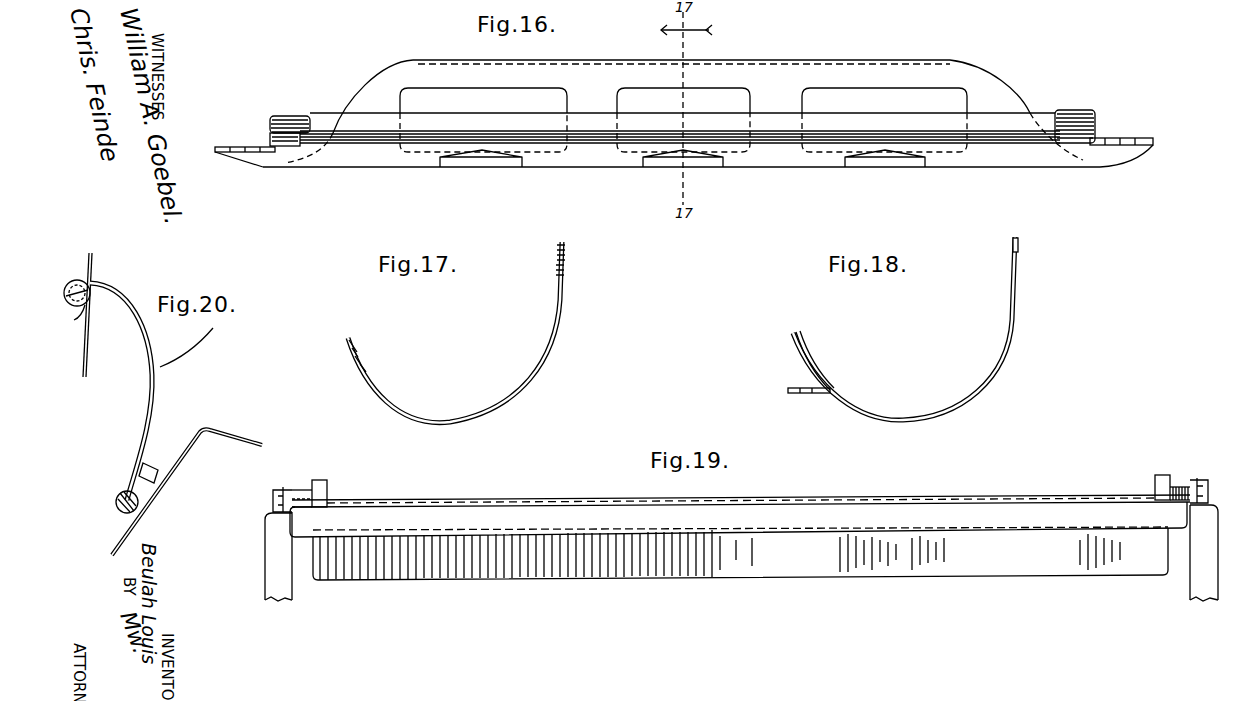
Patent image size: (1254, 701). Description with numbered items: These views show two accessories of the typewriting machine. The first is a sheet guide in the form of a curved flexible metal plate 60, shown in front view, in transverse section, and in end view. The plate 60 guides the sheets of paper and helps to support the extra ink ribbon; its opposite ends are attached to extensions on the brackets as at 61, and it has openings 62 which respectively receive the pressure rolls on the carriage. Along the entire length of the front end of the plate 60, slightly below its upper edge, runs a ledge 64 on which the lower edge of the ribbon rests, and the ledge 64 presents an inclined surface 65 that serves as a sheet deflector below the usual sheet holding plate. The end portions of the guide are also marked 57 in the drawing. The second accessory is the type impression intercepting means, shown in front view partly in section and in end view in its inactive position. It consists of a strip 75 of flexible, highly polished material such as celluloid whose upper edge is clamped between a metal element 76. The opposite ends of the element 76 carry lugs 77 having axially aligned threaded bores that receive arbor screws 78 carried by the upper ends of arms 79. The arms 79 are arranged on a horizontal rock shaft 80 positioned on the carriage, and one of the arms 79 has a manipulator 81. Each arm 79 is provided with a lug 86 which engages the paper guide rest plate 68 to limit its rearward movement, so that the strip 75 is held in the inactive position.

In FIG. 16, the clamp block 57 is at (285, 122).
In FIG. 18, the clamp block 57 is at (795, 350).
In FIG. 16, the curved flexible metal plate 60 is at (800, 70).
In FIG. 17, the curved flexible metal plate 60 is at (562, 310).
In FIG. 18, the curved flexible metal plate 60 is at (1014, 318).
In FIG. 16, the attachment of plate ends to bracket extensions 61 is at (226, 147).
In FIG. 18, the attachment of plate ends to bracket extensions 61 is at (795, 393).
In FIG. 16, the openings 62 is at (558, 97).
In FIG. 17, the openings 62 is at (535, 385).
In FIG. 16, the ledge 64 is at (684, 133).
In FIG. 17, the ledge 64 is at (345, 360).
In FIG. 16, the inclined surface 65 is at (790, 140).
In FIG. 17, the inclined surface 65 is at (358, 372).
In FIG. 20, the paper guide rest 68 is at (155, 495).
In FIG. 20, the strip 75 is at (88, 360).
In FIG. 19, the strip 75 is at (606, 580).
In FIG. 20, the metal element 76 is at (88, 318).
In FIG. 19, the metal element 76 is at (575, 500).
In FIG. 19, the lugs 77 is at (302, 488).
In FIG. 19, the arbor screws 78 is at (273, 496).
In FIG. 20, the arms 79 is at (150, 420).
In FIG. 19, the arms 79 is at (265, 560).
In FIG. 20, the rock shaft 80 is at (115, 504).
In FIG. 20, the manipulator 81 is at (196, 355).
In FIG. 20, the lug 86 is at (155, 470).